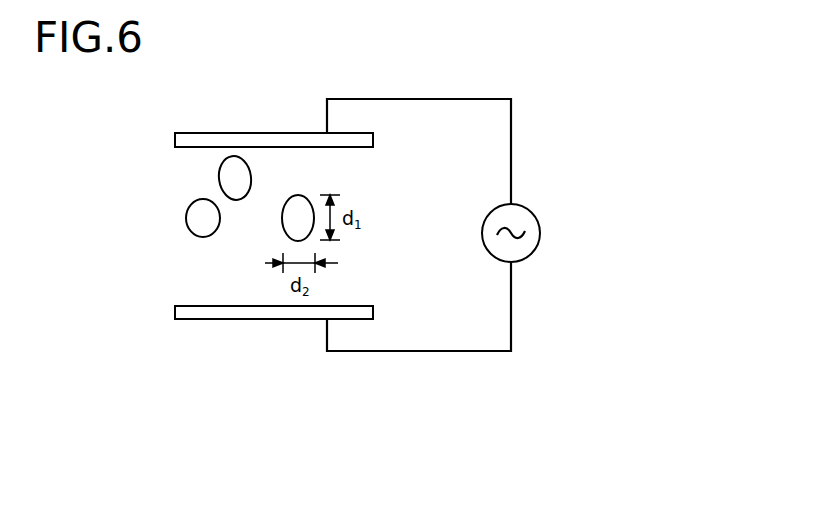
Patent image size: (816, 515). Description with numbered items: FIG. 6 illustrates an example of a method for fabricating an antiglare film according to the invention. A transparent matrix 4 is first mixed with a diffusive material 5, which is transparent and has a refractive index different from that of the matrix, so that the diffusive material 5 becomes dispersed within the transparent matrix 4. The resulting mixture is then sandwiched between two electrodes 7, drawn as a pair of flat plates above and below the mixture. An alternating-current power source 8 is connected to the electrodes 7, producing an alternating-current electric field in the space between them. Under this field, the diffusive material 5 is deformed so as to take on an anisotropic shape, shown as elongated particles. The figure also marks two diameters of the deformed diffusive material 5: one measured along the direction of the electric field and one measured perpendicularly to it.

The transparent matrix 4 is at (205, 273).
The diffusive material 5 is at (229, 180).
The electrodes 7 is at (188, 134).
The alternating-current power source 8 is at (531, 214).